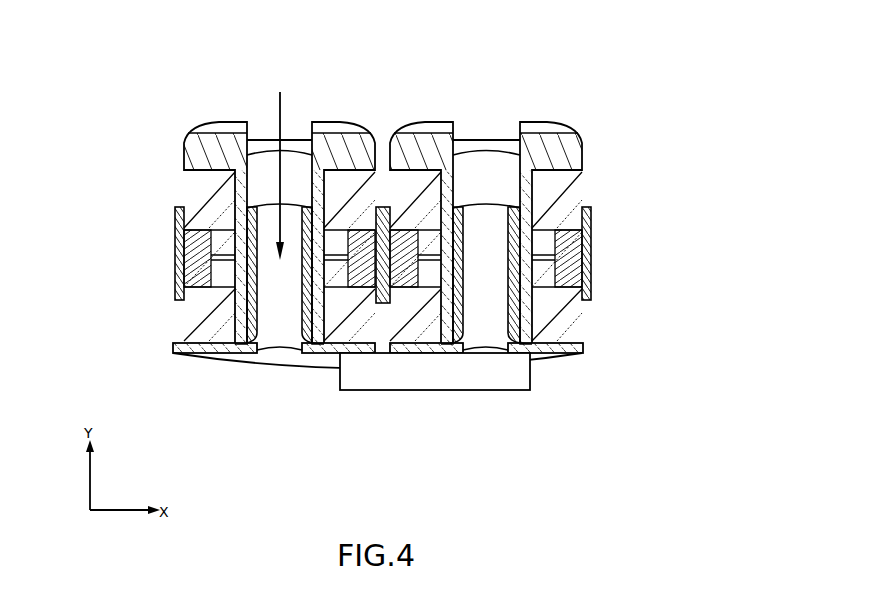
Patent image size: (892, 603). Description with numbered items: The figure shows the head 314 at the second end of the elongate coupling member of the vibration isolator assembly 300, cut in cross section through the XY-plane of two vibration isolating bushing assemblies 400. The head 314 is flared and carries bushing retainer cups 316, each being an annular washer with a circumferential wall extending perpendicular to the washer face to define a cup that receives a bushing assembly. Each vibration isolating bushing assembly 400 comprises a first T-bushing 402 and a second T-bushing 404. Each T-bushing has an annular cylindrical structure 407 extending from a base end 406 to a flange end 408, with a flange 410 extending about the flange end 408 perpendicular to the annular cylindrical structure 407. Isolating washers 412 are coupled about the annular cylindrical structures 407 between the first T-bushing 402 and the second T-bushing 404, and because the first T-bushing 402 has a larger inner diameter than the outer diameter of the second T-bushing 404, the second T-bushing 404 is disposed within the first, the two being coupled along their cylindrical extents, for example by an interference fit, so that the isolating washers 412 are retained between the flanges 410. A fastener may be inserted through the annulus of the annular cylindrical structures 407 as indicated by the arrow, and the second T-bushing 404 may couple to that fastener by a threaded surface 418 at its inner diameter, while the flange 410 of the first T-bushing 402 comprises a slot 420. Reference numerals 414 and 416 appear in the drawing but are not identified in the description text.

The vibration isolator assembly 300 is at (402, 62).
The head 314 is at (127, 257).
The bushing retainer cup 316 is at (592, 222).
The vibration isolating bushing assembly 400 is at (190, 92).
The first T-bushing 402 is at (600, 130).
The second T-bushing 404 is at (587, 367).
The base end 406 is at (240, 337).
The annular cylindrical structure 407 is at (238, 295).
The flange end 408 is at (452, 138).
The flange 410 is at (183, 157).
The isolating washer 412 is at (192, 188).
The plate 414 is at (540, 240).
The axis 416 is at (280, 107).
The threaded surface 418 is at (508, 290).
The slot 420 is at (520, 133).